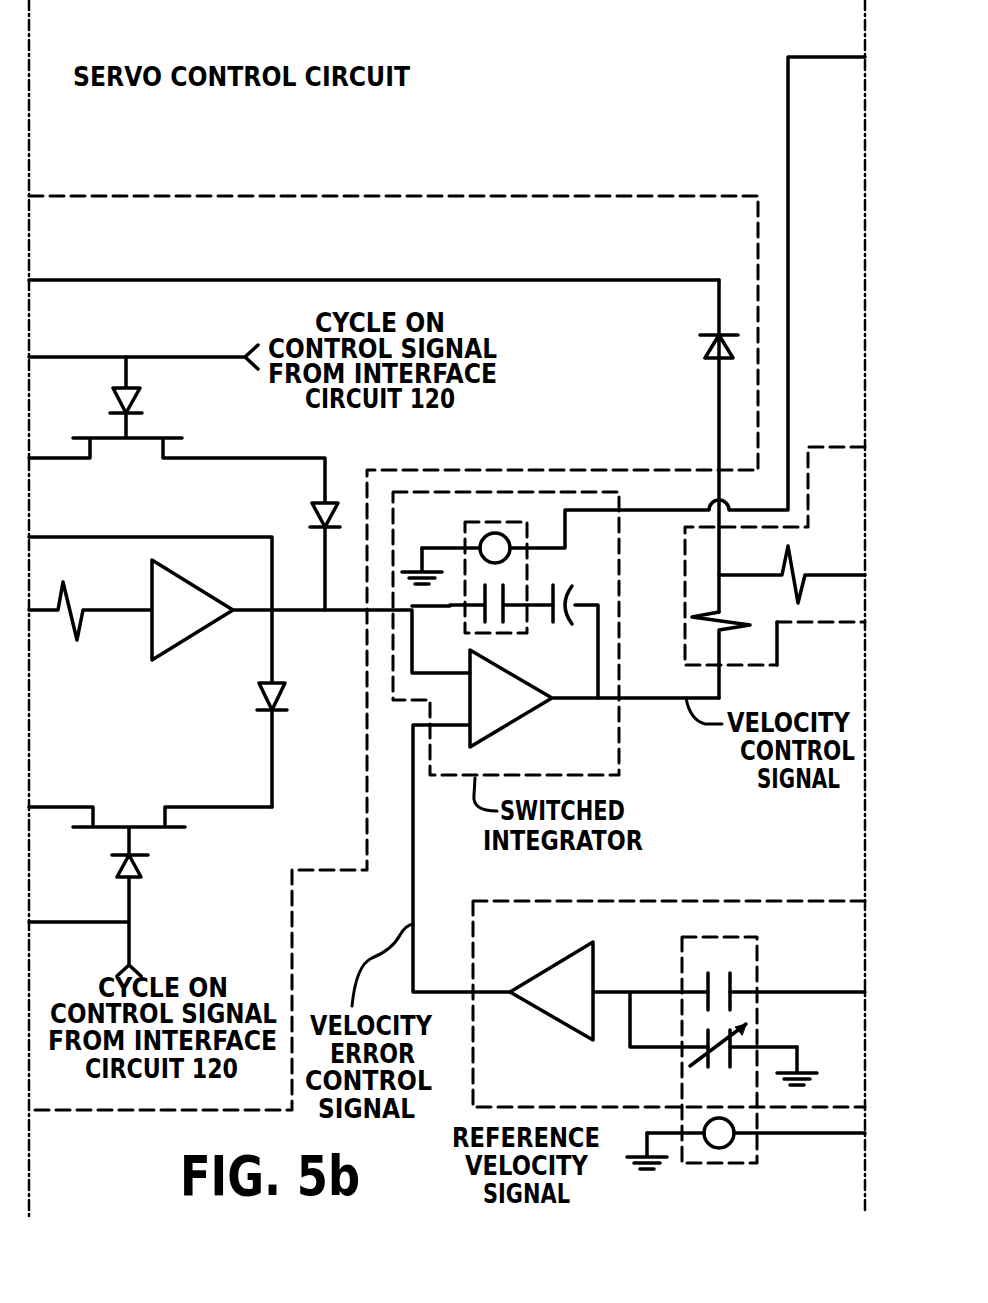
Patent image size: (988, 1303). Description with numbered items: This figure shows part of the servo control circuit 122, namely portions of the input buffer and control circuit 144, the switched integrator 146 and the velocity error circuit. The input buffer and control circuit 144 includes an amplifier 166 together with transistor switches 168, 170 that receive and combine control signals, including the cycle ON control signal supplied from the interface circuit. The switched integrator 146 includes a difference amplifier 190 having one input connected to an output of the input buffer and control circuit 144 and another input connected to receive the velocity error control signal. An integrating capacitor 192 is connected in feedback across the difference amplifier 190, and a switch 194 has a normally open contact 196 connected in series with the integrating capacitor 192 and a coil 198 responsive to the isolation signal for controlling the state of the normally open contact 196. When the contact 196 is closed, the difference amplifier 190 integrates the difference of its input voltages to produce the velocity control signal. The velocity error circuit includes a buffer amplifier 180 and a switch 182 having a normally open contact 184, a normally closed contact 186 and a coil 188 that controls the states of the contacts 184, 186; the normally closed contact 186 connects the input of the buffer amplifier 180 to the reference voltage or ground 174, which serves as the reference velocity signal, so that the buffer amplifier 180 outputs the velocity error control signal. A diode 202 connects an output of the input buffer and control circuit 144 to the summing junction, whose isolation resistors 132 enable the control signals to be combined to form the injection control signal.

The servo control circuit 122 is at (585, 163).
The input buffer and control circuit 144 is at (238, 196).
The switched integrator 146 is at (621, 740).
The amplifier 166 is at (178, 647).
The transistor switch 168 is at (152, 433).
The transistor switch 170 is at (143, 825).
The reference voltage or ground 174 is at (405, 570).
The buffer amplifier 180 is at (568, 1027).
The switch 182 is at (722, 1165).
The normally open contact 184 is at (735, 975).
The normally closed contact 186 is at (700, 1033).
The coil 188 is at (730, 1145).
The difference amplifier 190 is at (496, 730).
The integrating capacitor 192 is at (572, 592).
The switch 194 is at (497, 634).
The normally open contact 196 is at (452, 607).
The coil 198 is at (495, 533).
The diode 202 is at (700, 338).
The isolation resistors 132 is at (790, 563).